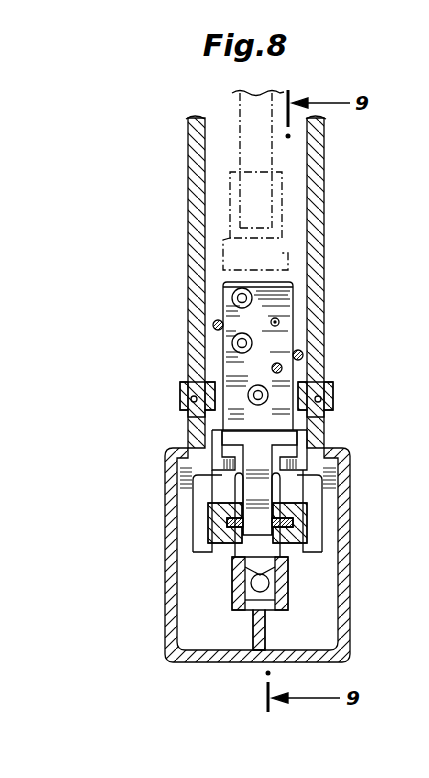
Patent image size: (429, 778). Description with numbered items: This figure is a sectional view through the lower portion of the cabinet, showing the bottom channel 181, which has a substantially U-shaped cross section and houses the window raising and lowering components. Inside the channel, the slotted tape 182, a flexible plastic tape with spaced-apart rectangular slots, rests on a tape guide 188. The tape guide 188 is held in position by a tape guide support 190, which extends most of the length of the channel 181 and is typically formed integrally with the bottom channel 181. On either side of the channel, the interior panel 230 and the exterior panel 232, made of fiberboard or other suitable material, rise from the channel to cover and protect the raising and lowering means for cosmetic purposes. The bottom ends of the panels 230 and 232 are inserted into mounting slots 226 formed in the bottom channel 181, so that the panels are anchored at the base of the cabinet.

The bottom channel 181 is at (170, 593).
The slotted tape 182 is at (240, 518).
The tape guide 188 is at (307, 513).
The tape guide support 190 is at (272, 590).
The mounting slots 226 is at (188, 397).
The interior panel 230 is at (190, 229).
The exterior panel 232 is at (318, 231).